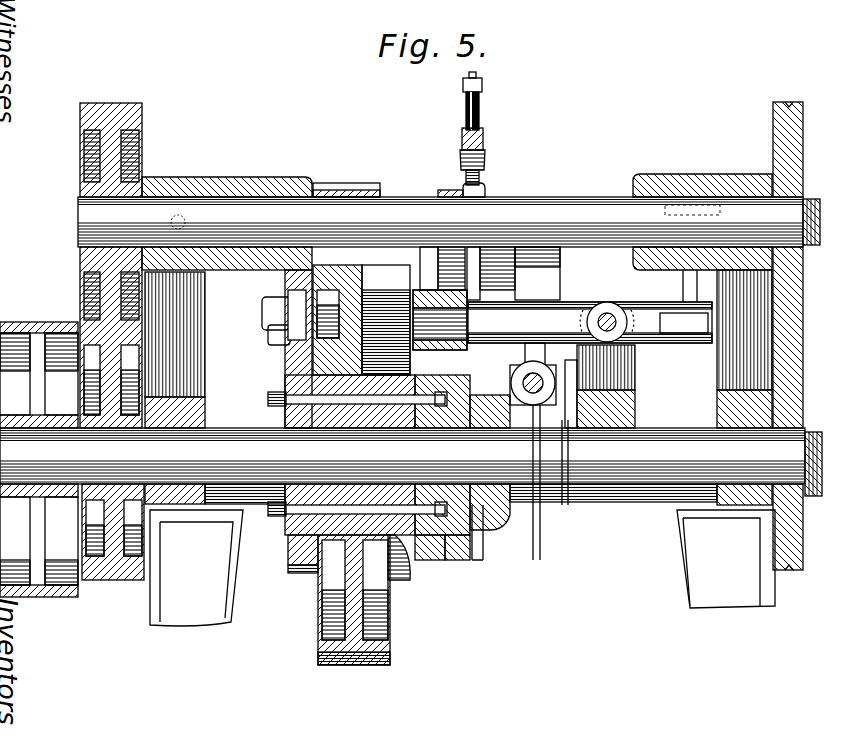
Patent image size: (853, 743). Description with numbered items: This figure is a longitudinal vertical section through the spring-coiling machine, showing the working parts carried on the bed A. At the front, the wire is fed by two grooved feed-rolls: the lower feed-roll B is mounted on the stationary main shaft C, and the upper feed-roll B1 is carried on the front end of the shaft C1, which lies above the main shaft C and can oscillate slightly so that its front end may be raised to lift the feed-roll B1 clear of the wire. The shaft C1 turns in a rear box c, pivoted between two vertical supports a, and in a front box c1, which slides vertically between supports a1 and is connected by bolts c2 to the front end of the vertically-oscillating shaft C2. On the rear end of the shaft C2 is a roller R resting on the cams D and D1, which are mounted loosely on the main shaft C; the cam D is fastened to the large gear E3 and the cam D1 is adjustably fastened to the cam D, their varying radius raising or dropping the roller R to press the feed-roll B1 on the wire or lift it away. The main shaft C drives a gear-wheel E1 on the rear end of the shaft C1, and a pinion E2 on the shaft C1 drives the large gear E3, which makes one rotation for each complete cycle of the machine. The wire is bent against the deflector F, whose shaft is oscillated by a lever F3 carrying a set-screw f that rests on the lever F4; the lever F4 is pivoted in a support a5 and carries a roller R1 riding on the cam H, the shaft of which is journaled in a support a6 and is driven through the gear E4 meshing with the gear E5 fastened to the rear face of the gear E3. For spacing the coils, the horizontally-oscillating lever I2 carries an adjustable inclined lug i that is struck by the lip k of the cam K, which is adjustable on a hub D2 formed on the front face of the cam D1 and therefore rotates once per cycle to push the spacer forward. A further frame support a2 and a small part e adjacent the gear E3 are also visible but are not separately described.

The upper feed-roll shaft C1 is at (568, 200).
The main shaft C is at (587, 462).
The bed A is at (625, 490).
The upper feed-roll B1 is at (803, 172).
The lower feed-roll B is at (803, 396).
The gear-wheel E1 is at (80, 167).
The deflector F is at (58, 320).
The rear box c is at (210, 180).
The pinion E2 is at (352, 188).
The vertical supports a is at (195, 322).
The gear-wheel E4 is at (302, 310).
The support a6 is at (388, 300).
The roller R is at (428, 292).
The roller R1 is at (452, 190).
The support a5 is at (510, 286).
The set-screw f is at (480, 108).
The lever F3 is at (489, 155).
The oscillating lever F4 is at (478, 190).
The front box c1 is at (702, 180).
The bolts c2 is at (683, 284).
The vertically-oscillating shaft C2 is at (556, 308).
The cam H is at (455, 268).
The inclined lug i is at (512, 372).
The horizontally-oscillating lever I2 is at (544, 482).
The cam K is at (565, 505).
The lip k is at (497, 520).
The gear a2 is at (635, 376).
The supports a1 is at (738, 332).
The hub D2 is at (483, 555).
The cam D is at (427, 552).
The cam D1 is at (458, 552).
The large gear E3 is at (390, 650).
The cam piece e is at (398, 578).
The gear E5 is at (296, 560).